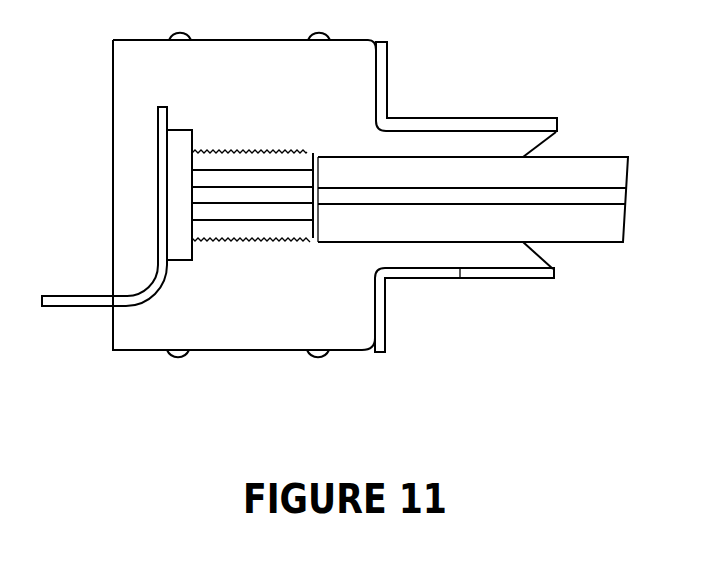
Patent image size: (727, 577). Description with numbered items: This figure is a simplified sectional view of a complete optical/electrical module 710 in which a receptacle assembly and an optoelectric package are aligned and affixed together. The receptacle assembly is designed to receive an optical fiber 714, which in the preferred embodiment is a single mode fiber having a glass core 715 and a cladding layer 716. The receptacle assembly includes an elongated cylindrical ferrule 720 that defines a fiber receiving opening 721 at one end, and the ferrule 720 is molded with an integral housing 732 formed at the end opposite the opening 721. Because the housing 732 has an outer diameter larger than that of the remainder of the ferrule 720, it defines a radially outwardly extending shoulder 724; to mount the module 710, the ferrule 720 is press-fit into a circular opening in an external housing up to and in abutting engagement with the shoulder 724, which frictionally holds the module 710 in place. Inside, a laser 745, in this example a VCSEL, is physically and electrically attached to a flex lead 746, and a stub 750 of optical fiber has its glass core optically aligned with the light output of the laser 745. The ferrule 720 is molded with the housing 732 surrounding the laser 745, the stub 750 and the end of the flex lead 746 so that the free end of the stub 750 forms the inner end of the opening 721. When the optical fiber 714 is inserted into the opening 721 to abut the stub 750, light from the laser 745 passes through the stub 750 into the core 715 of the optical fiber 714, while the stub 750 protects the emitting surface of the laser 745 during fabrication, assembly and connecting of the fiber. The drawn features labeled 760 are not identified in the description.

The optical/electrical module 710 is at (504, 76).
The optical fiber 714 is at (569, 144).
The glass core 715 is at (630, 196).
The cladding layer 716 is at (601, 232).
The ferrule 720 is at (367, 56).
The fiber receiving opening 721 is at (566, 258).
The shoulder 724 is at (363, 106).
The housing 732 is at (118, 328).
The laser 745 is at (183, 145).
The flex lead 746 is at (165, 109).
The stub 750 is at (262, 167).
The bracket tabs 760 is at (493, 129).